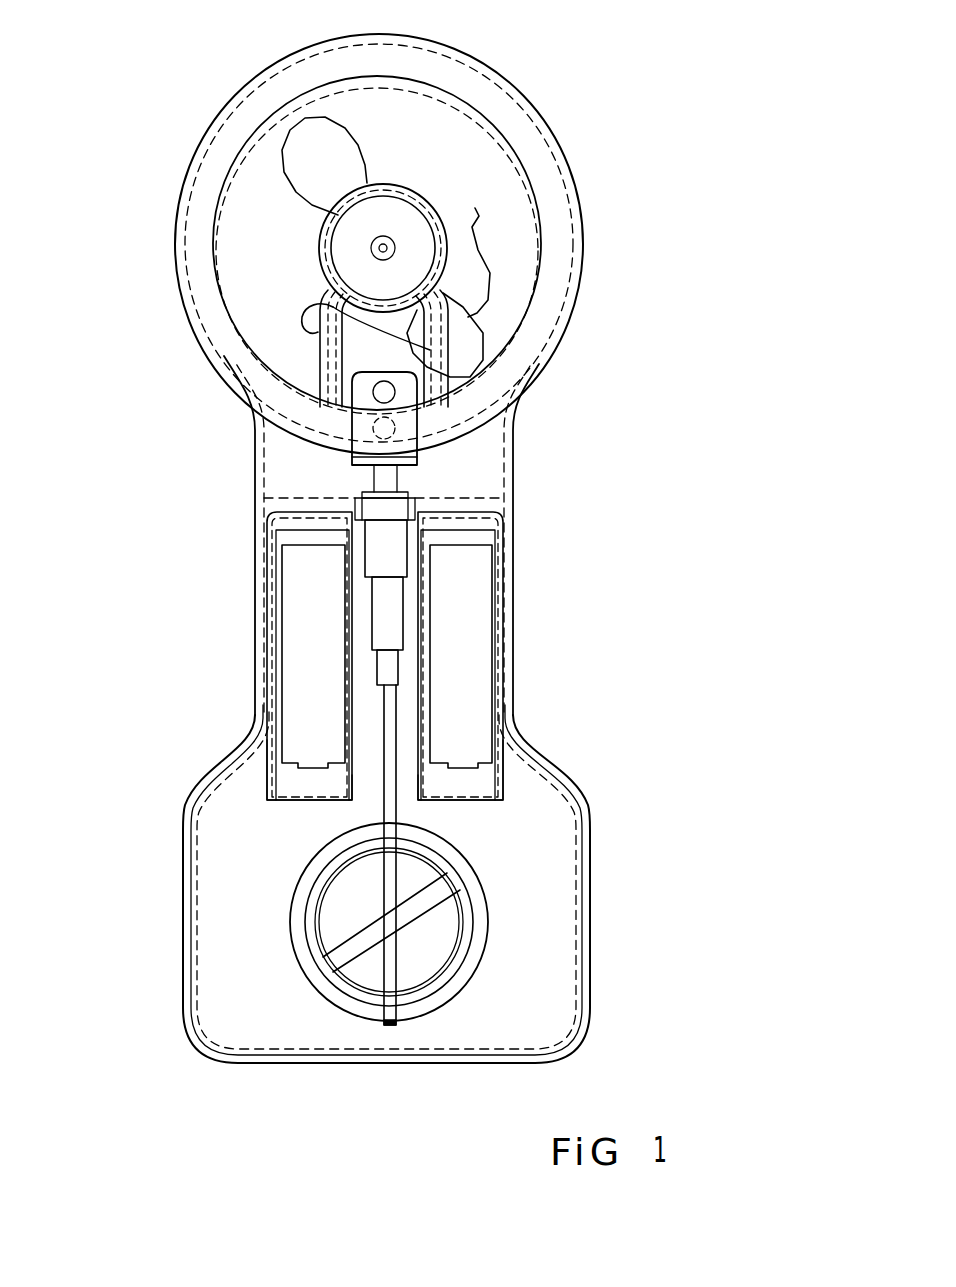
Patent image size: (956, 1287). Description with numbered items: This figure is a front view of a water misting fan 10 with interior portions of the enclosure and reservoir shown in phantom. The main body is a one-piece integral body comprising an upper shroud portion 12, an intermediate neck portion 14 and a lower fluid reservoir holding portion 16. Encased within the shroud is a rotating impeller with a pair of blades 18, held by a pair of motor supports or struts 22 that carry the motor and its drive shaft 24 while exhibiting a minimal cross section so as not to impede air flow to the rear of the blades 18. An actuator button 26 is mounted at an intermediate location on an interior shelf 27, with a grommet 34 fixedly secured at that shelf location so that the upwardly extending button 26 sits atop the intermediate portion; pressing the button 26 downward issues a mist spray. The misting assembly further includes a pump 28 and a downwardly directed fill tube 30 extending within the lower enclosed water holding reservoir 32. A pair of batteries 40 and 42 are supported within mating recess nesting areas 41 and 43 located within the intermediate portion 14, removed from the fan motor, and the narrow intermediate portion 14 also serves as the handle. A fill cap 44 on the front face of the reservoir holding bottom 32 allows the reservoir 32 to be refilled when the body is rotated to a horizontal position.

The misting fan 10 is at (712, 253).
The upper shroud portion 12 is at (236, 103).
The intermediate neck portion 14 is at (255, 480).
The lower fluid reservoir holding portion 16 is at (183, 945).
The impeller blades 18 is at (352, 158).
The motor supports 22 is at (320, 310).
The motor drive shaft 24 is at (378, 246).
The actuator button 26 is at (417, 428).
The interior shelf 27 is at (460, 497).
The pump 28 is at (393, 548).
The fill tube 30 is at (383, 805).
The water holding reservoir 32 is at (537, 1002).
The grommet 34 is at (297, 508).
The battery 40 is at (302, 648).
The nesting area 41 is at (275, 760).
The battery 42 is at (468, 647).
The nesting area 43 is at (502, 772).
The fill cap 44 is at (337, 952).